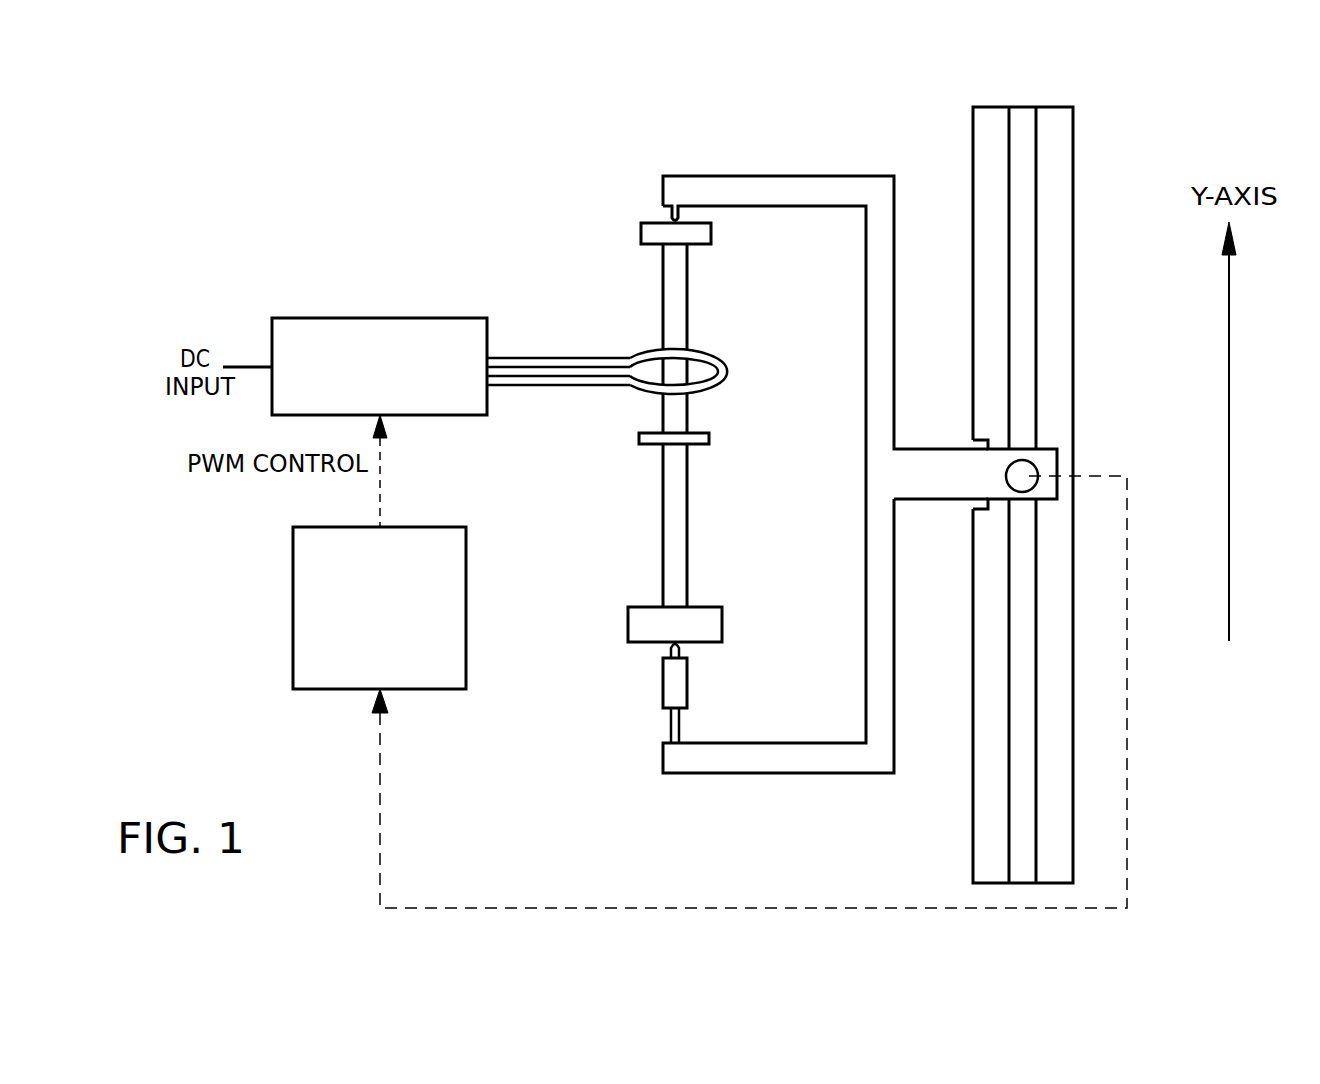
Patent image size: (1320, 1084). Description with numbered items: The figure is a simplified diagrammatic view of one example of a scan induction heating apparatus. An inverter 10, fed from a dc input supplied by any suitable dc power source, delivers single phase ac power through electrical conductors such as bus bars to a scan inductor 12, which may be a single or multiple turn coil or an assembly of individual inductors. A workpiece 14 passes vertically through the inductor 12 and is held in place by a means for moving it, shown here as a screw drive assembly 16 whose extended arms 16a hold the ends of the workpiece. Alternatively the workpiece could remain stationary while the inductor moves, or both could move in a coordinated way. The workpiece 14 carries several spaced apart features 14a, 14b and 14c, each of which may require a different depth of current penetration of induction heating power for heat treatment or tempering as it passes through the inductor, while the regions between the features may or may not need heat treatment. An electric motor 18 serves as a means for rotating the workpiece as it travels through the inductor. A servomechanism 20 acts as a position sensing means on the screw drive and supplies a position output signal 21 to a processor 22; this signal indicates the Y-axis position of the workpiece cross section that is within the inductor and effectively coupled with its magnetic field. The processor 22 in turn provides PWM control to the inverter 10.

The inverter 10 is at (446, 330).
The scan inductor 12 is at (640, 350).
The workpiece 14 is at (676, 432).
The feature 14a is at (655, 231).
The feature 14b is at (650, 438).
The feature 14c is at (637, 611).
The screw drive assembly 16 is at (1058, 195).
The extended arms 16a is at (784, 187).
The electric motor 18 is at (672, 681).
The servomechanism 20 is at (1022, 476).
The position output signal 21 is at (380, 813).
The processor 22 is at (428, 548).